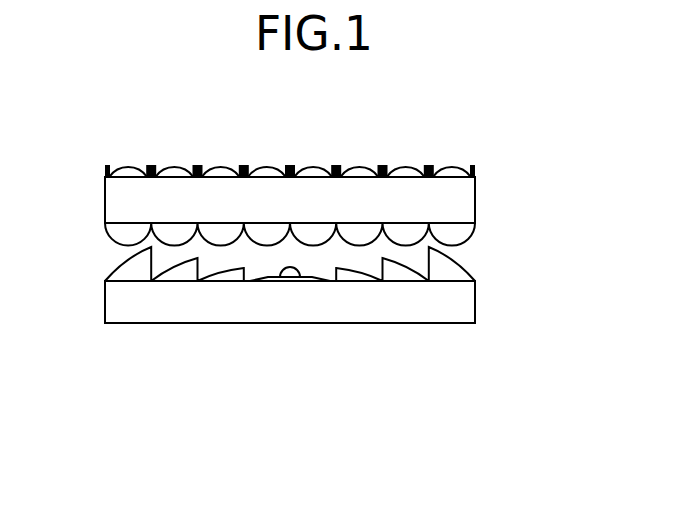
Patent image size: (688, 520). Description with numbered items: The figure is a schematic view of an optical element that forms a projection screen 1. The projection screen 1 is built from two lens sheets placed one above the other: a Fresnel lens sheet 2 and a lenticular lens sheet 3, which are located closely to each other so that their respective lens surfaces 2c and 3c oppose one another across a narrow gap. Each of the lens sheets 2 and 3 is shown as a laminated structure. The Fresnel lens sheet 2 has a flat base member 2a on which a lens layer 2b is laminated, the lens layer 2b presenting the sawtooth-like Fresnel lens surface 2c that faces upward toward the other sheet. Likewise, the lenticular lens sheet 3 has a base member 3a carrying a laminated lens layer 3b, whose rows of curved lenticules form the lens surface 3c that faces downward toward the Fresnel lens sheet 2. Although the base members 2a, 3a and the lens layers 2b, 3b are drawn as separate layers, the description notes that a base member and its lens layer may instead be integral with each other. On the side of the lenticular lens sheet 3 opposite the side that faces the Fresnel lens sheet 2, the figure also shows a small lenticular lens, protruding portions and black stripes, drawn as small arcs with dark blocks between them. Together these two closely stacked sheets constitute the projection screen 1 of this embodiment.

The projection screen 1 is at (236, 134).
The Fresnel lens sheet 2 is at (400, 332).
The base member 2a is at (455, 305).
The lens layer 2b is at (450, 265).
The lens surface 2c is at (290, 267).
The lenticular lens sheet 3 is at (408, 160).
The base member 3a is at (455, 195).
The lens layer 3b is at (458, 233).
The lens surface 3c is at (203, 237).